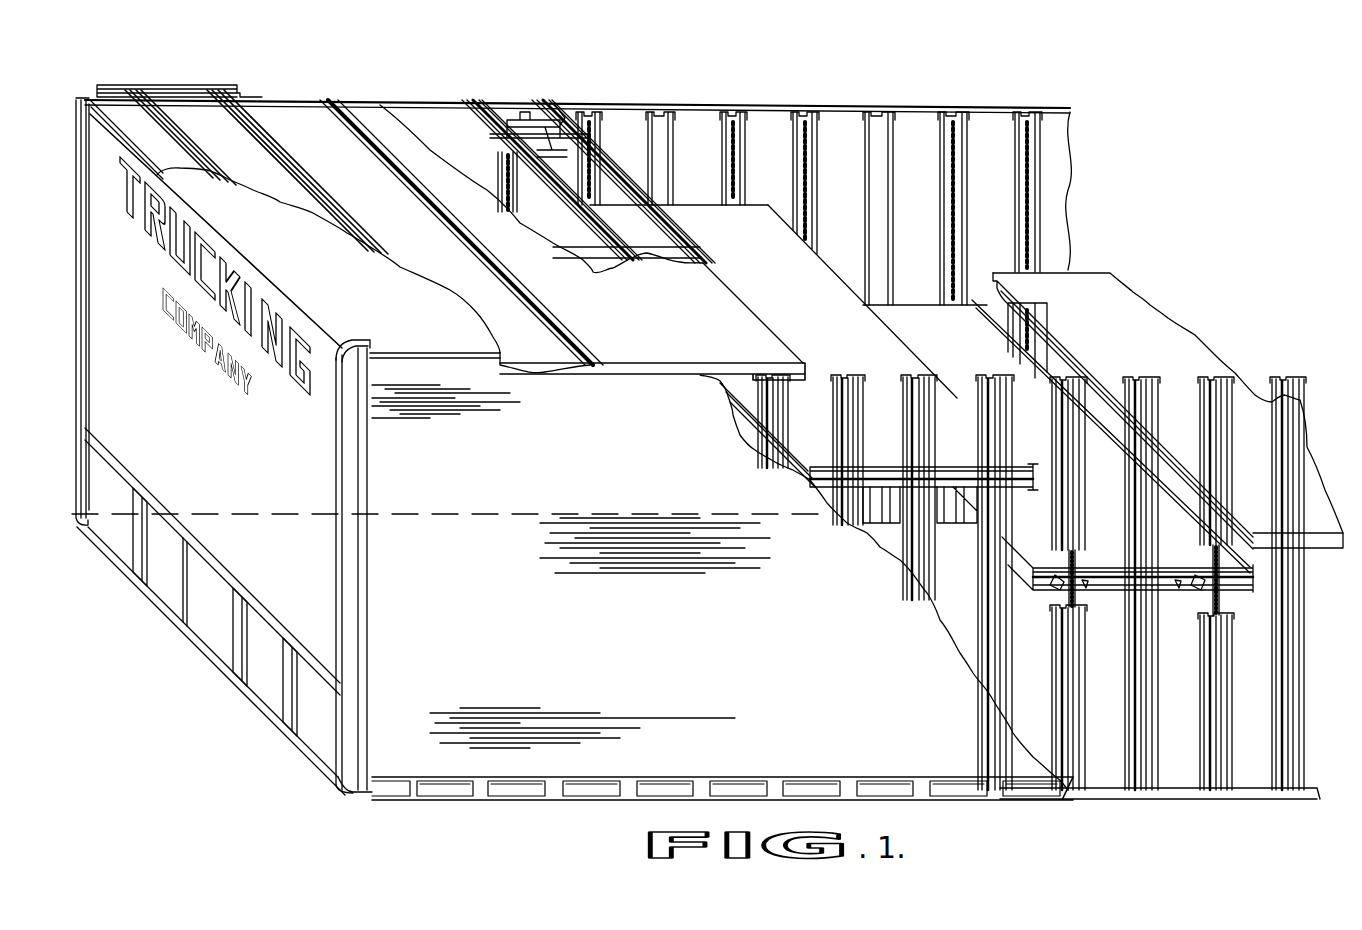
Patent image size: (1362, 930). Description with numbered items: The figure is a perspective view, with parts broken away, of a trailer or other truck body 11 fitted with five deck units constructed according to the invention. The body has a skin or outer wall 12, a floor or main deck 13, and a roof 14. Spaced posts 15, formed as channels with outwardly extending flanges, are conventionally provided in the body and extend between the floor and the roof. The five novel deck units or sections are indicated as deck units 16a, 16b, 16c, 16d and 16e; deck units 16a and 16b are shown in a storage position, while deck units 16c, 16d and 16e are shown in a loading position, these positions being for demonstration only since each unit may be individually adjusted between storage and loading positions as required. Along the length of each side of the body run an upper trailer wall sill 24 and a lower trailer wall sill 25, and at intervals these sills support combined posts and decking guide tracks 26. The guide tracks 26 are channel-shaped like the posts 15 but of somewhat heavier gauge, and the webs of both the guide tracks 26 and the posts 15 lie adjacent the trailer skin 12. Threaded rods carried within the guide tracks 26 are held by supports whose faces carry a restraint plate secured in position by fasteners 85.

The truck body 11 is at (658, 82).
The skin 12 is at (437, 760).
The floor 13 is at (879, 483).
The roof 14 is at (222, 108).
The posts 15 is at (922, 402).
The deck unit 16a is at (304, 120).
The deck unit 16b is at (446, 128).
The deck unit 16c is at (812, 262).
The deck unit 16d is at (1105, 413).
The deck unit 16e is at (1228, 364).
The upper trailer wall sill 24 is at (514, 112).
The lower trailer wall sill 25 is at (1180, 800).
The combined posts and decking guide tracks 26 is at (1217, 513).
The fasteners 85 is at (675, 243).